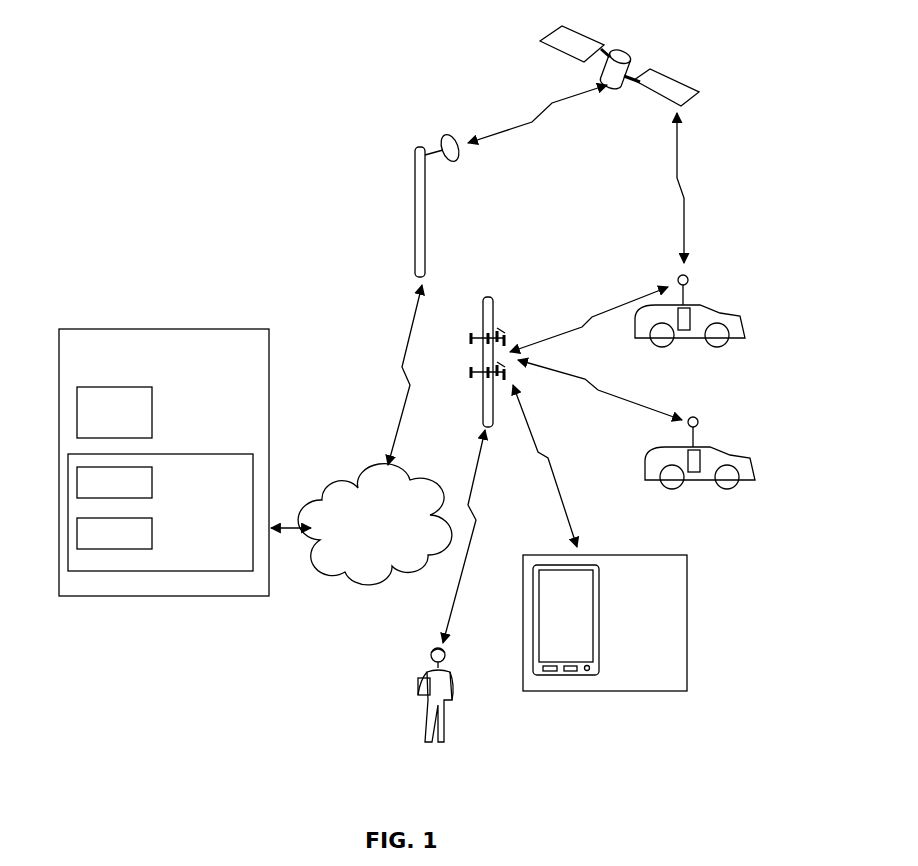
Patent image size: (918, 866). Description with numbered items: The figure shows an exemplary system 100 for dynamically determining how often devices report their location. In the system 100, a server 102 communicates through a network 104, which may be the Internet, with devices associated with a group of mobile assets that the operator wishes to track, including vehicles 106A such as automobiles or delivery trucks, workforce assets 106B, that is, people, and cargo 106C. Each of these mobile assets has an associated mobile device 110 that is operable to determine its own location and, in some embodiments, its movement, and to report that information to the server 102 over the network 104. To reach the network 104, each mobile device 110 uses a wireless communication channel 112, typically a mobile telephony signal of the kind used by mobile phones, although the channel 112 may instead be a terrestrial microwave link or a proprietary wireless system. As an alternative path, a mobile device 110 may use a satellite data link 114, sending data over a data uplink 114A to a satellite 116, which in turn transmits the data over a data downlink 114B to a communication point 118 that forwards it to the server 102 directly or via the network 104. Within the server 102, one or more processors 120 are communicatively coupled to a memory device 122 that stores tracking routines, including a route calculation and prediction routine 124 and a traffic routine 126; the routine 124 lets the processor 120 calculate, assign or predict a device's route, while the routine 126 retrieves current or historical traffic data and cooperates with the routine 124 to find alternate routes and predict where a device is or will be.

The system 100 is at (118, 76).
The server 102 is at (190, 329).
The network 104 is at (334, 488).
The vehicles 106A is at (722, 310).
The workforce assets 106B is at (432, 648).
The cargo 106C is at (660, 691).
The mobile device 110 is at (688, 325).
The wireless communication channel 112 is at (556, 327).
The satellite data link 114 is at (619, 78).
The data uplink 114A is at (682, 170).
The data downlink 114B is at (512, 122).
The satellite 116 is at (625, 52).
The communication point 118 is at (418, 172).
The processor 120 is at (118, 387).
The memory device 122 is at (210, 454).
The route calculation and/or prediction routine 124 is at (77, 478).
The traffic routine 126 is at (77, 531).